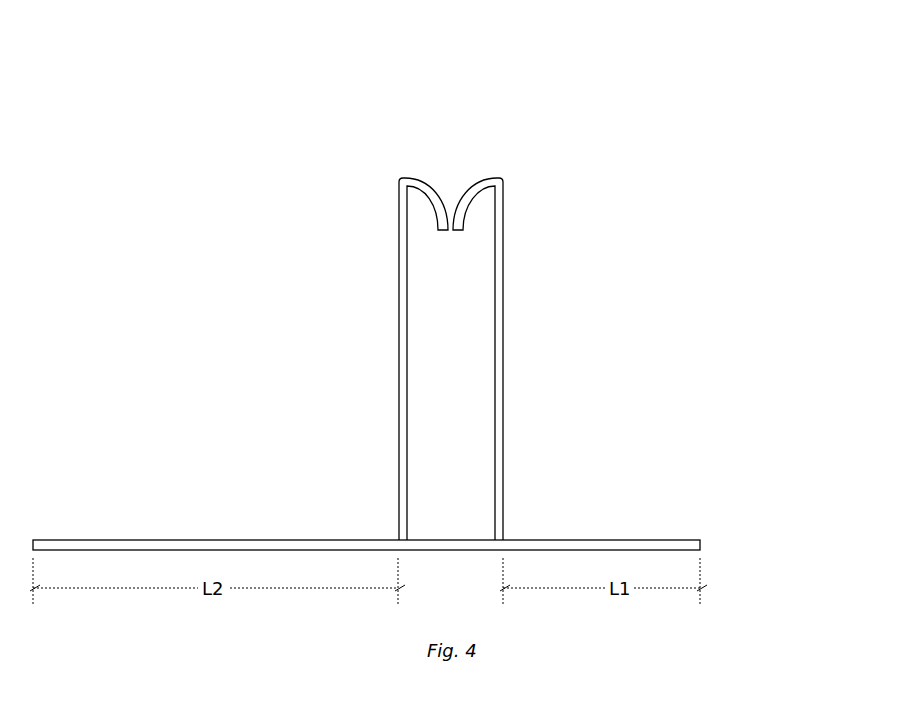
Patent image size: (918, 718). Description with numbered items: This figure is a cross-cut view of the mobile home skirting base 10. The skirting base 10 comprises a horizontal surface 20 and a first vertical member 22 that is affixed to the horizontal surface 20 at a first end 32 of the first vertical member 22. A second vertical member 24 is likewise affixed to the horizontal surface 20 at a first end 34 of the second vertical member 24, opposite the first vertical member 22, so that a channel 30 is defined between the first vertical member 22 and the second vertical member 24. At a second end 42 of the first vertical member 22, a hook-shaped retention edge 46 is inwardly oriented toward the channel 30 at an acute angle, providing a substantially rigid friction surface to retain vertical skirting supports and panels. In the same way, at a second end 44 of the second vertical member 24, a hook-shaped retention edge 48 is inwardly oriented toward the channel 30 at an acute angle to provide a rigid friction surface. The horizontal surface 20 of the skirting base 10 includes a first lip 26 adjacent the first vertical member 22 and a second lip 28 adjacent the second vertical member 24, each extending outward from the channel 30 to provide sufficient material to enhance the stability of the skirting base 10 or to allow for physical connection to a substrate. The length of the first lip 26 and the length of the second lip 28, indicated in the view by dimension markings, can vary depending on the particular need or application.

The skirting base 10 is at (456, 120).
The horizontal surface 20 is at (700, 541).
The first vertical member 22 is at (503, 318).
The second vertical member 24 is at (396, 260).
The first lip 26 is at (600, 540).
The second lip 28 is at (192, 540).
The channel 30 is at (465, 350).
The first end of the first vertical member 32 is at (503, 540).
The first end of the second vertical member 34 is at (398, 540).
The second end of the first vertical member 42 is at (500, 178).
The second end of the second vertical member 44 is at (400, 180).
The hook-shaped retention edge 46 is at (470, 190).
The hook-shaped retention edge 48 is at (430, 180).